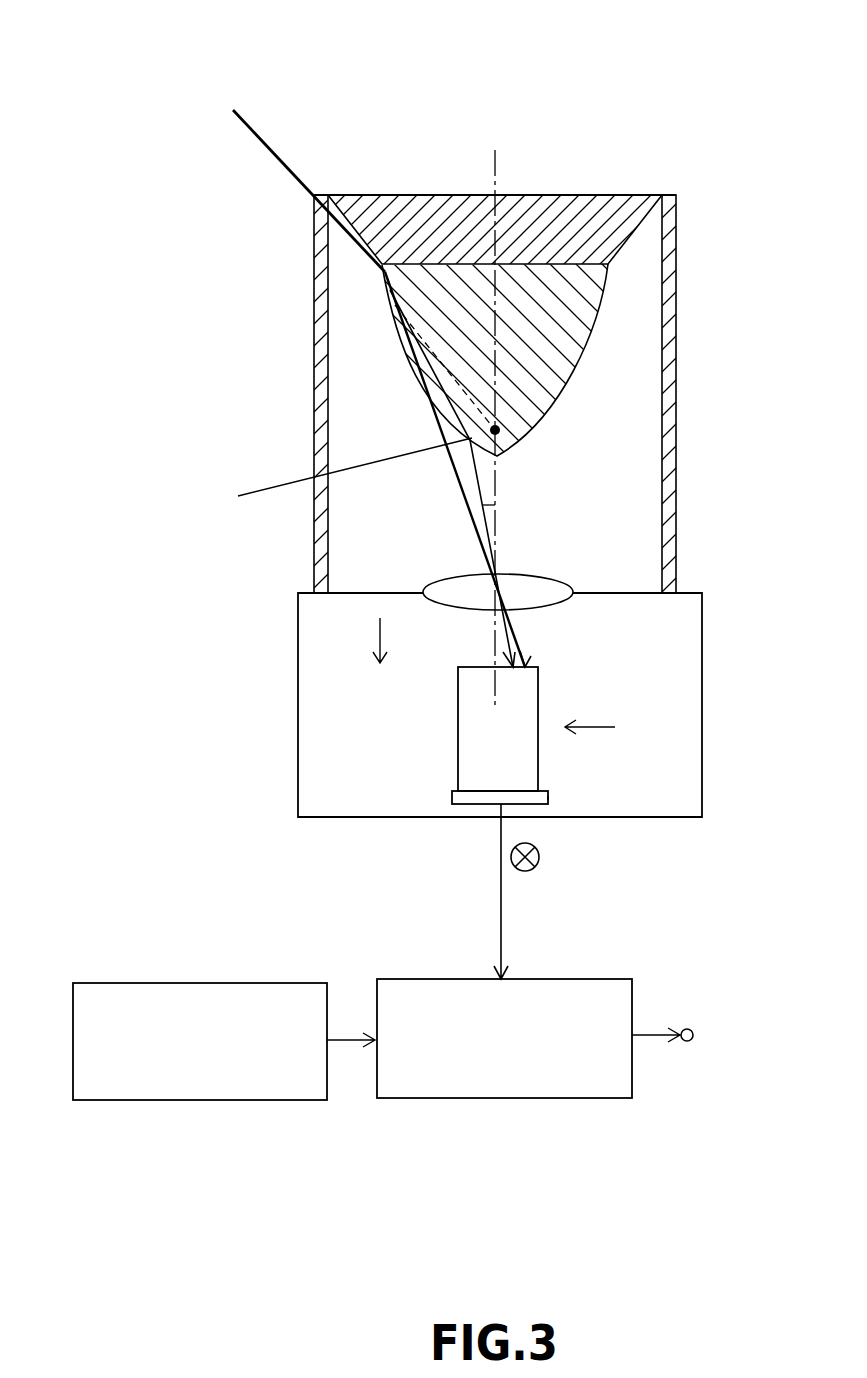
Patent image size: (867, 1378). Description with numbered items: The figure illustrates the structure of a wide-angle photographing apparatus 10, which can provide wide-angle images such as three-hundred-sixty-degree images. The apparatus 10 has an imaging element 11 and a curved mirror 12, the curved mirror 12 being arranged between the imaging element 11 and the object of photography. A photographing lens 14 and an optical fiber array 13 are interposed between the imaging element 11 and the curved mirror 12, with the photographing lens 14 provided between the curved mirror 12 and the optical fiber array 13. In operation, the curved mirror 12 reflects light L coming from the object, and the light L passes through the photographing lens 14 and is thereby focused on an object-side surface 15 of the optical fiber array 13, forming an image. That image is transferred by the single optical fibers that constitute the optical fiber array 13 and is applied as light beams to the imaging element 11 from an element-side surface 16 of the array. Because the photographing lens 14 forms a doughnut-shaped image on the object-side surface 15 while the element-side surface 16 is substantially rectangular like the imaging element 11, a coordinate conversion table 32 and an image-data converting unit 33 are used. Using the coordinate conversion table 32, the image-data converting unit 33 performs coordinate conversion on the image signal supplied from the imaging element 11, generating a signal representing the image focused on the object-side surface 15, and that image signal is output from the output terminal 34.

The wide-angle photographing apparatus 10 is at (466, 31).
The imaging element 11 is at (550, 797).
The curved mirror 12 is at (540, 332).
The optical fiber array 13 is at (490, 742).
The photographing lens 14 is at (527, 588).
The object-side surface 15 is at (457, 662).
The element-side surface 16 is at (475, 792).
The coordinate conversion table 32 is at (177, 983).
The image-data converting unit 33 is at (450, 979).
The output terminal 34 is at (688, 1028).
The light L is at (255, 143).